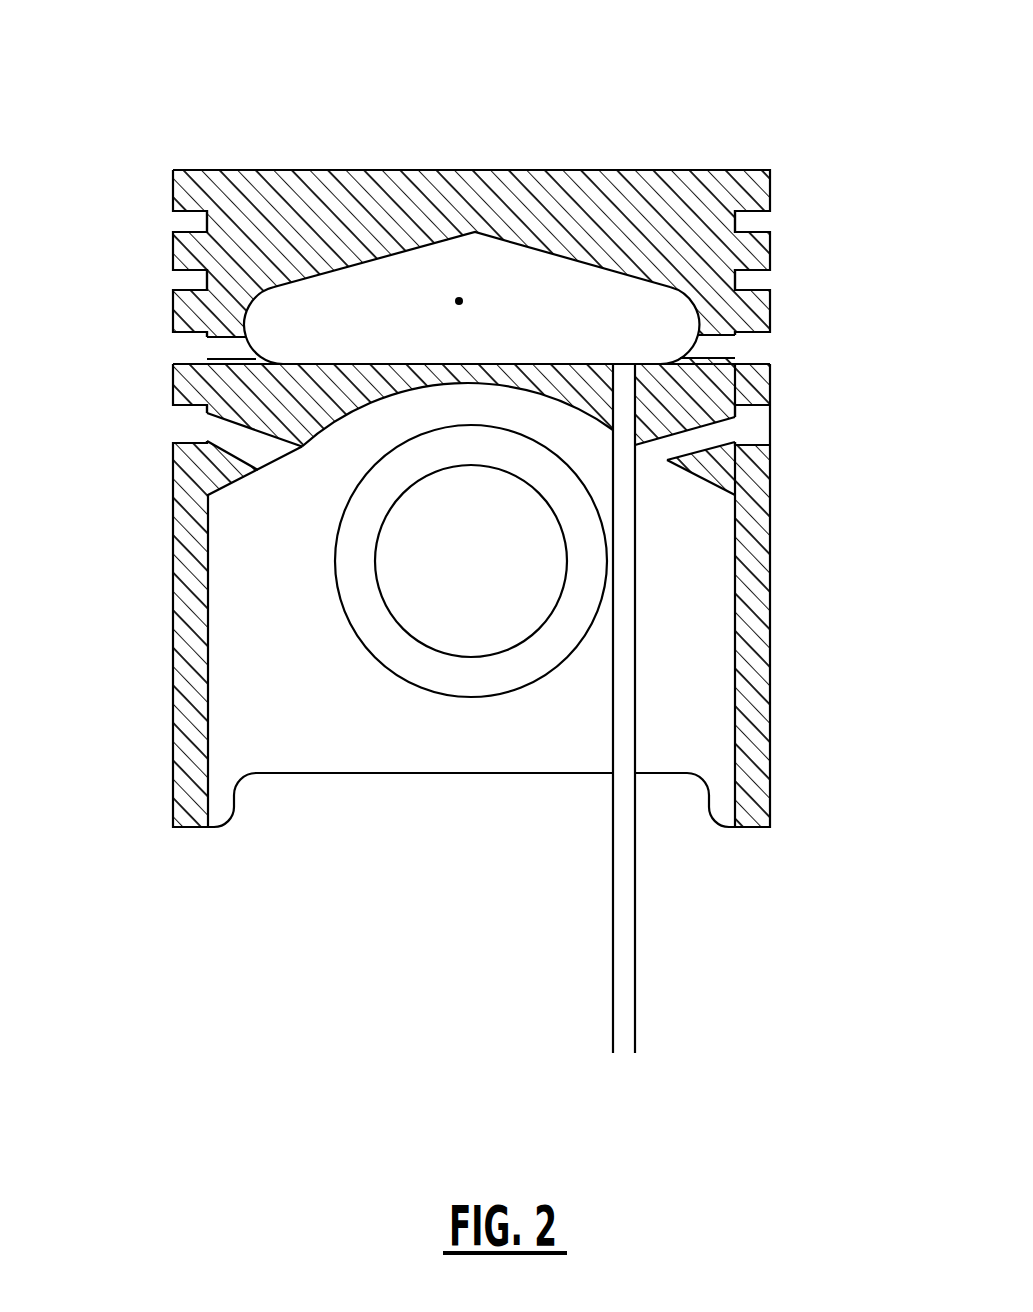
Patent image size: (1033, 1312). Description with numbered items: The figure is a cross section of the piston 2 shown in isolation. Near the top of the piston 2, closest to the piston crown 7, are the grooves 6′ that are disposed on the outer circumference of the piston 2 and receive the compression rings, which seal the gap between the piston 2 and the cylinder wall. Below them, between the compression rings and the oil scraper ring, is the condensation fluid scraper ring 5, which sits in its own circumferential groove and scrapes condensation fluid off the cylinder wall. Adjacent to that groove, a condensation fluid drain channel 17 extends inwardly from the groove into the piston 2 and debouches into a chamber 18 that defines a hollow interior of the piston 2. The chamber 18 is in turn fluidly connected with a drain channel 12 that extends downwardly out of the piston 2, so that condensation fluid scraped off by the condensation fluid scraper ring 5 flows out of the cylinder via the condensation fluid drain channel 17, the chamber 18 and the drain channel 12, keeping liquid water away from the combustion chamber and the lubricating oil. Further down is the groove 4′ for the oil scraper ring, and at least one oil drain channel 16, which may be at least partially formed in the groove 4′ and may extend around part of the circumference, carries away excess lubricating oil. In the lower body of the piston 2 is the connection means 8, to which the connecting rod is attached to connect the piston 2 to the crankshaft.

The piston 2 is at (273, 137).
The piston crown 7 is at (663, 185).
The groove 6′ is at (140, 223).
The condensation fluid scraper ring 5 is at (140, 348).
The groove 4′ is at (140, 427).
The condensation fluid drain channel 17 is at (233, 348).
The chamber 18 is at (456, 300).
The oil drain channel 16 is at (250, 442).
The connection means 8 is at (427, 598).
The drain channel 12 is at (623, 733).